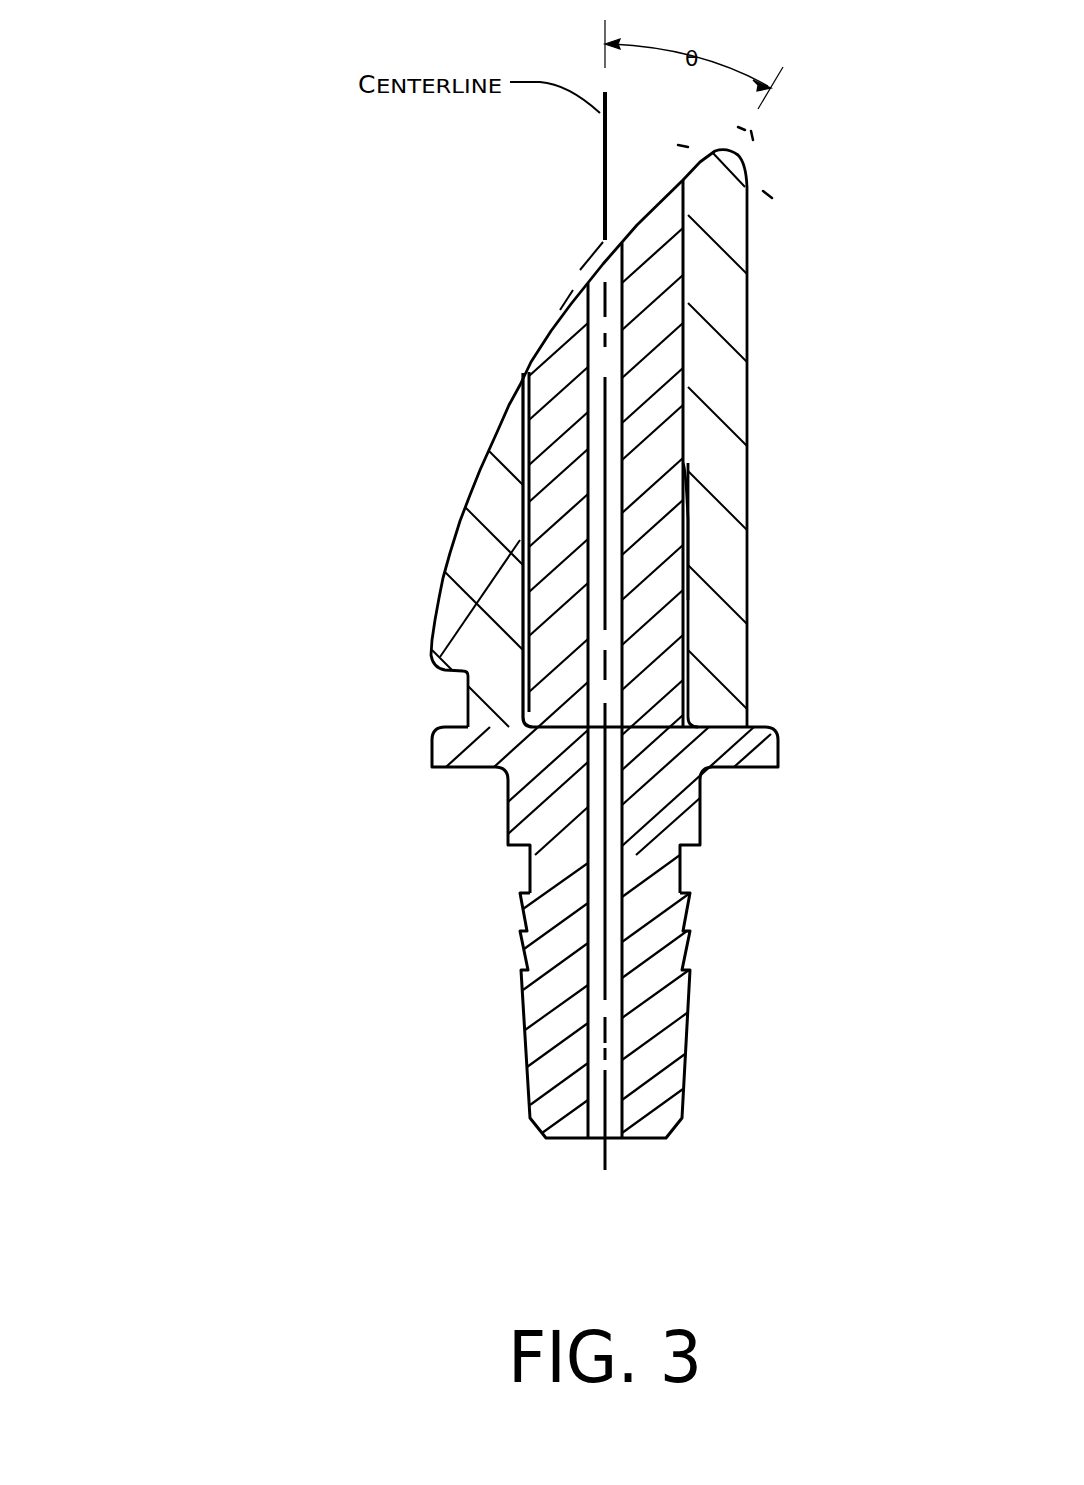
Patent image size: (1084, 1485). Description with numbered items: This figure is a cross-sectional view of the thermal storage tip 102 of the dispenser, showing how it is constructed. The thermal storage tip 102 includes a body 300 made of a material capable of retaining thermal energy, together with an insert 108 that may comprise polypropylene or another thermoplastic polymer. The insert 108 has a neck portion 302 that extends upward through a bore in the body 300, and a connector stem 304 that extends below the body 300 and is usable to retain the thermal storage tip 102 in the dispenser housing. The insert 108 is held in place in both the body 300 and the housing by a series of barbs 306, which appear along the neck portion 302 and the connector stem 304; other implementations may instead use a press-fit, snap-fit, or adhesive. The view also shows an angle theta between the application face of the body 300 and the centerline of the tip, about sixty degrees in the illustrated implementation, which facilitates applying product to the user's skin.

The thermal storage tip 102 is at (295, 99).
The insert 108 is at (504, 1161).
The body 300 is at (473, 493).
The neck portion 302 is at (545, 348).
The connector stem 304 is at (565, 982).
The barbs 306 is at (688, 597).